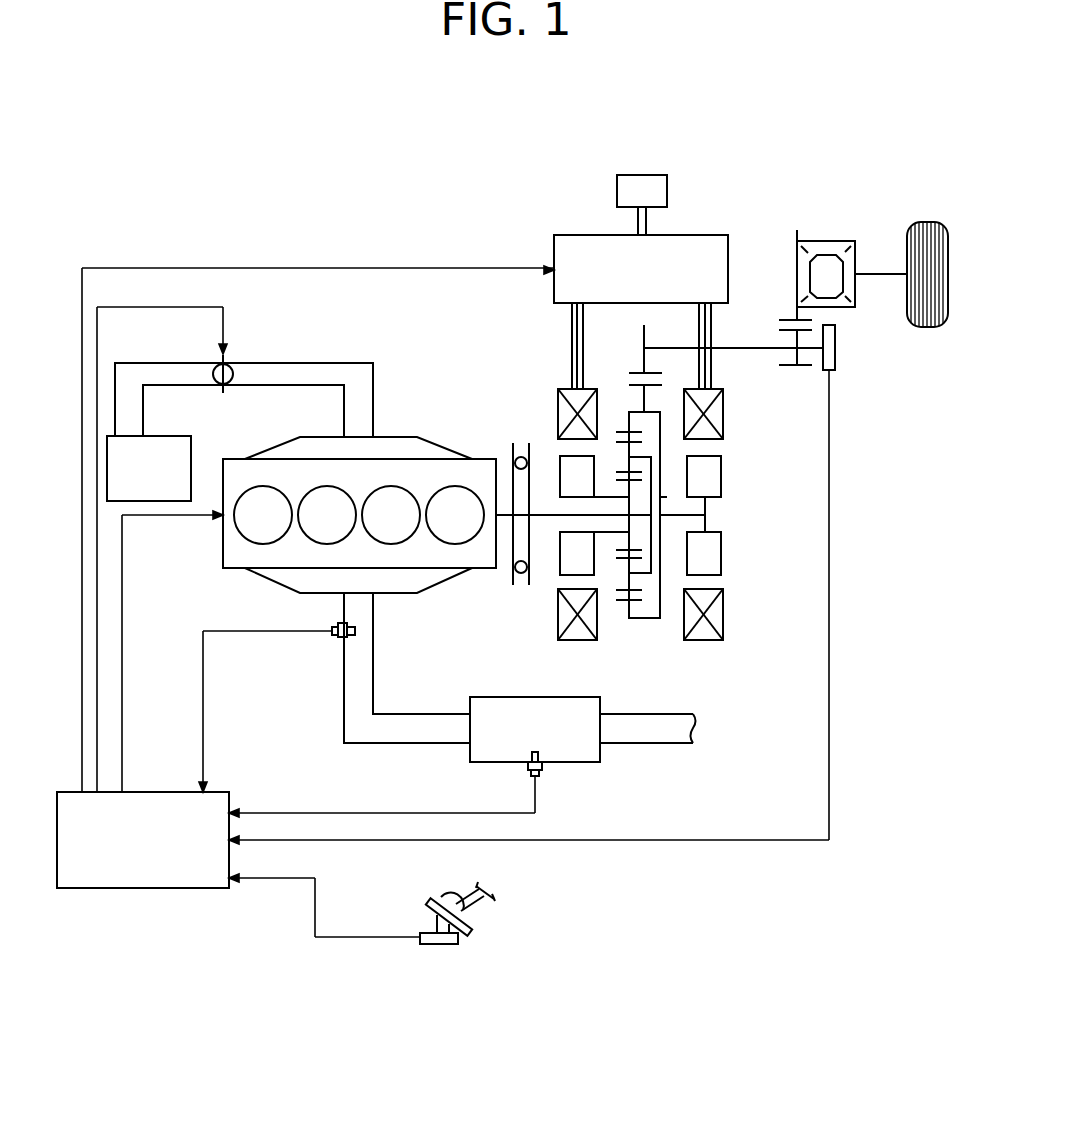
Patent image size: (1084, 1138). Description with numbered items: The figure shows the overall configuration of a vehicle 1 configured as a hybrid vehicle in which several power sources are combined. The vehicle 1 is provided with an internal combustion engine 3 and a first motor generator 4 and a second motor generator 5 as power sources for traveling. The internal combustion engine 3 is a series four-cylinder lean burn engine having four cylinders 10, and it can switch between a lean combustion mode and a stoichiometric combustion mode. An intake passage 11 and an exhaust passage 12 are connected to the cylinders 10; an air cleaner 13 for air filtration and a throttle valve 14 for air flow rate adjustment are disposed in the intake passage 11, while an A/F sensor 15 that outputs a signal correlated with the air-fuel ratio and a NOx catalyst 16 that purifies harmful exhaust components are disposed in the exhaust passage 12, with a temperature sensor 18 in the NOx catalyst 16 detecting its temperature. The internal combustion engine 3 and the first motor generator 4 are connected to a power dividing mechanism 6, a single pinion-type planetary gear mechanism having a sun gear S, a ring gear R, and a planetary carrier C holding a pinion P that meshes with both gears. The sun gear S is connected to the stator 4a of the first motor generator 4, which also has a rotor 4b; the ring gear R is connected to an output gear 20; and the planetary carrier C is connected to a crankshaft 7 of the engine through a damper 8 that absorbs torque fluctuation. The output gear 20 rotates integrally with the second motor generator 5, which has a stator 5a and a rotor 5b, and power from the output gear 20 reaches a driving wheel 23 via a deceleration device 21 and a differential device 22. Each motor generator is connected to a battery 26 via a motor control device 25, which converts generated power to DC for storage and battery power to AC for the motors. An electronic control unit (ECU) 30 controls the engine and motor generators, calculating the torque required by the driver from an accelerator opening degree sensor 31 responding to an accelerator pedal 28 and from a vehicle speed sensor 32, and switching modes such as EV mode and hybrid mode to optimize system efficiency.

The vehicle 1 is at (488, 162).
The internal combustion engine 3 is at (347, 475).
The first motor generator 4 is at (564, 481).
The stator 4a is at (558, 424).
The rotor 4b is at (566, 577).
The second motor generator 5 is at (735, 524).
The stator 5a is at (723, 430).
The rotor 5b is at (721, 540).
The power dividing mechanism 6 is at (638, 473).
The crankshaft 7 is at (505, 500).
The damper 8 is at (509, 580).
The cylinder 10 is at (262, 530).
The intake passage 11 is at (306, 362).
The exhaust passage 12 is at (376, 620).
The air cleaner 13 is at (165, 436).
The throttle valve 14 is at (214, 366).
The A/F sensor 15 is at (340, 640).
The NOx catalyst 16 is at (470, 697).
The temperature sensor 18 is at (543, 775).
The output gear 20 is at (650, 398).
The deceleration device 21 is at (743, 356).
The differential device 22 is at (823, 242).
The driving wheel 23 is at (930, 222).
The motor control device 25 is at (554, 245).
The battery 26 is at (619, 190).
The accelerator pedal 28 is at (428, 901).
The electronic control unit (ECU) 30 is at (162, 792).
The accelerator opening degree sensor 31 is at (420, 933).
The vehicle speed sensor 32 is at (838, 350).
The ring gear R is at (638, 431).
The sun gear S is at (638, 481).
The planetary carrier C is at (672, 496).
The pinion P is at (639, 559).